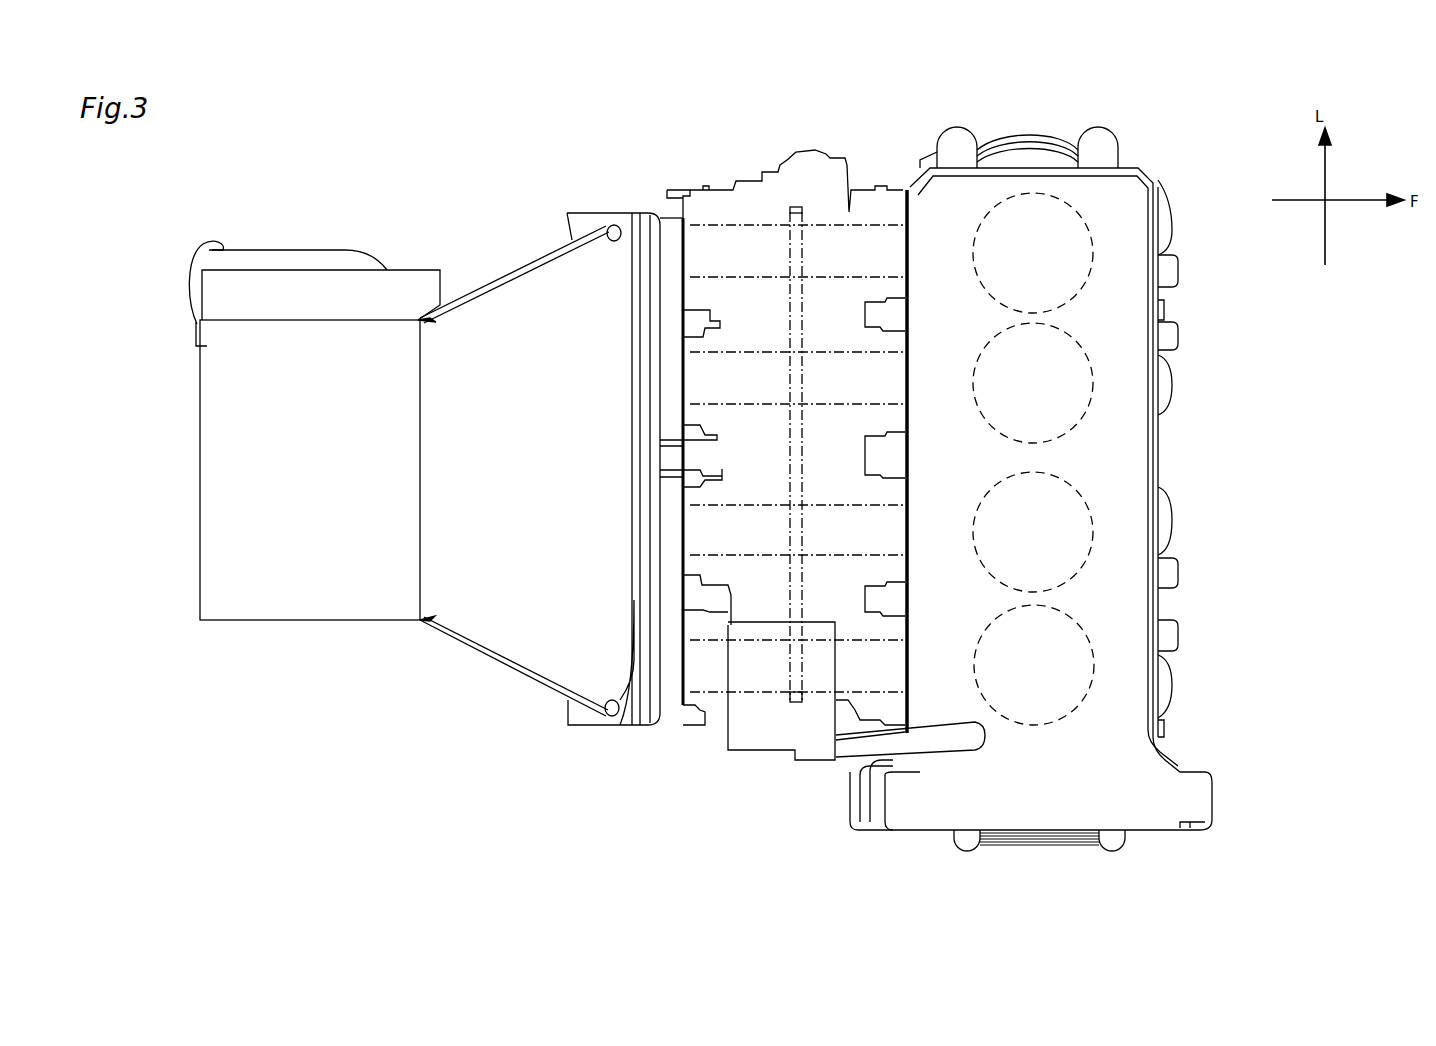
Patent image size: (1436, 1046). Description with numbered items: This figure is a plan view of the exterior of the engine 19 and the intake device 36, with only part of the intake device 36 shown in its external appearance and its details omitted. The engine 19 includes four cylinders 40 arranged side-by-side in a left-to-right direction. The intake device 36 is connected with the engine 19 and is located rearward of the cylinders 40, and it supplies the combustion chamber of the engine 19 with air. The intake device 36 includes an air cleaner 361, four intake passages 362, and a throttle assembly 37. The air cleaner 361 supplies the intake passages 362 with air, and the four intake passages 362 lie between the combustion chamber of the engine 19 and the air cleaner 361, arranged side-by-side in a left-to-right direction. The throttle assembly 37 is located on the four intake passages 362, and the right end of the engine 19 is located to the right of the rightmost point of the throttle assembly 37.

The engine 19 is at (1120, 418).
The intake device 36 is at (594, 272).
The air cleaner 361 is at (360, 570).
The intake passages 362 is at (758, 660).
The throttle assembly 37 is at (783, 705).
The cylinders 40 is at (1045, 540).